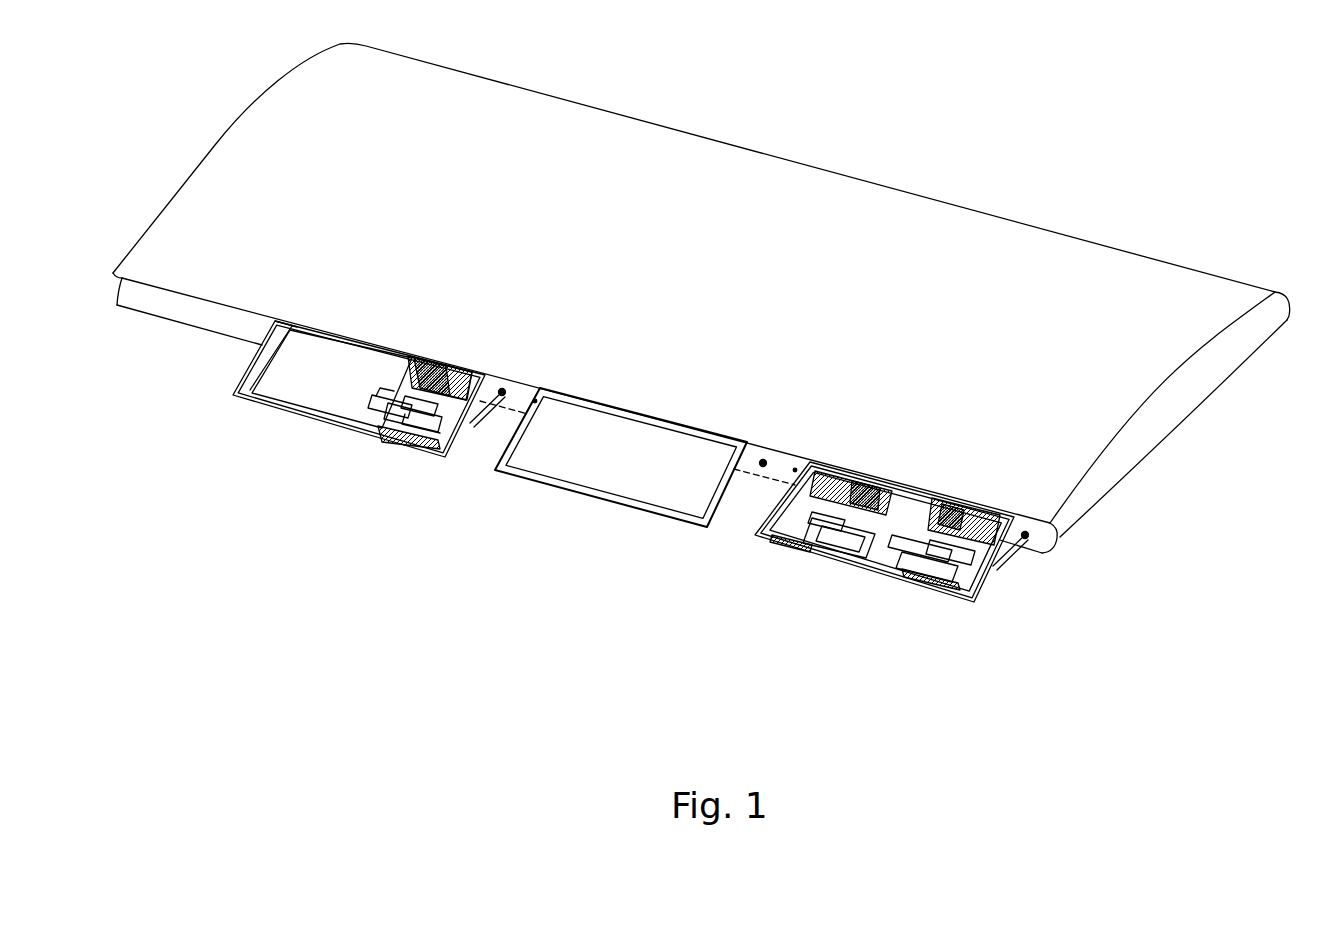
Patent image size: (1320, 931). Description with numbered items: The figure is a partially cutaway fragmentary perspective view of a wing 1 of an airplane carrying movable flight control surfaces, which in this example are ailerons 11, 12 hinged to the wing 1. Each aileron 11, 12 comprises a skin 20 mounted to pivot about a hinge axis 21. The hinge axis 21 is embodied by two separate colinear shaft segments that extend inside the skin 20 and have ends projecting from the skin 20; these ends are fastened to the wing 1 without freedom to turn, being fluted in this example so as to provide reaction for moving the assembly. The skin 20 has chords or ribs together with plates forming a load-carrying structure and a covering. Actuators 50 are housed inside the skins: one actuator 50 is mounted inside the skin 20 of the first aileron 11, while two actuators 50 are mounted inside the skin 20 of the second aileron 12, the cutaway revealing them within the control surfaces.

The wing 1 is at (1205, 378).
The aileron 11 is at (352, 466).
The aileron 12 is at (850, 597).
The skin 20 is at (470, 423).
The hinge axis 21 is at (503, 397).
The actuator 50 is at (336, 406).